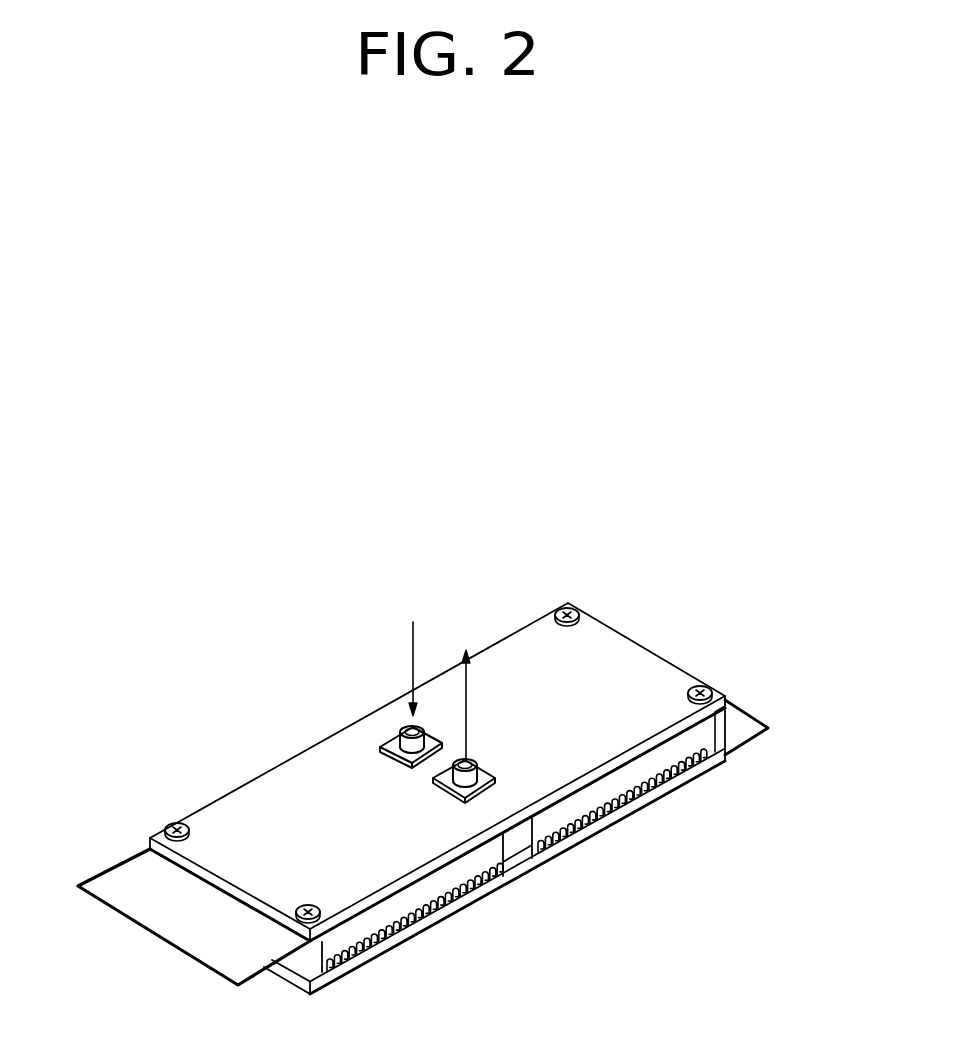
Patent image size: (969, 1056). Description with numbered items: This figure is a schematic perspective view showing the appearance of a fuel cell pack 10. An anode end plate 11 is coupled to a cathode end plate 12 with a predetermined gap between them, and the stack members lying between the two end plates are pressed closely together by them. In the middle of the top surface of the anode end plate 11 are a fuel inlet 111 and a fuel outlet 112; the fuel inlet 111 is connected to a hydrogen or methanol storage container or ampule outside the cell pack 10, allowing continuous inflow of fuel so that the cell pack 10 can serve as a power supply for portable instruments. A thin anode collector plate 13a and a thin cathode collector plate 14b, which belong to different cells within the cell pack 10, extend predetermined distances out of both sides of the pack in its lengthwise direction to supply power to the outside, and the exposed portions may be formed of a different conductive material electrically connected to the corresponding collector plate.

The fuel cell pack 10 is at (430, 709).
The anode end plate 11 is at (487, 660).
The fuel inlet 111 is at (407, 725).
The fuel outlet 112 is at (470, 762).
The cathode end plate 12 is at (648, 803).
The anode collector plate 13a is at (132, 890).
The cathode collector plate 14b is at (740, 727).